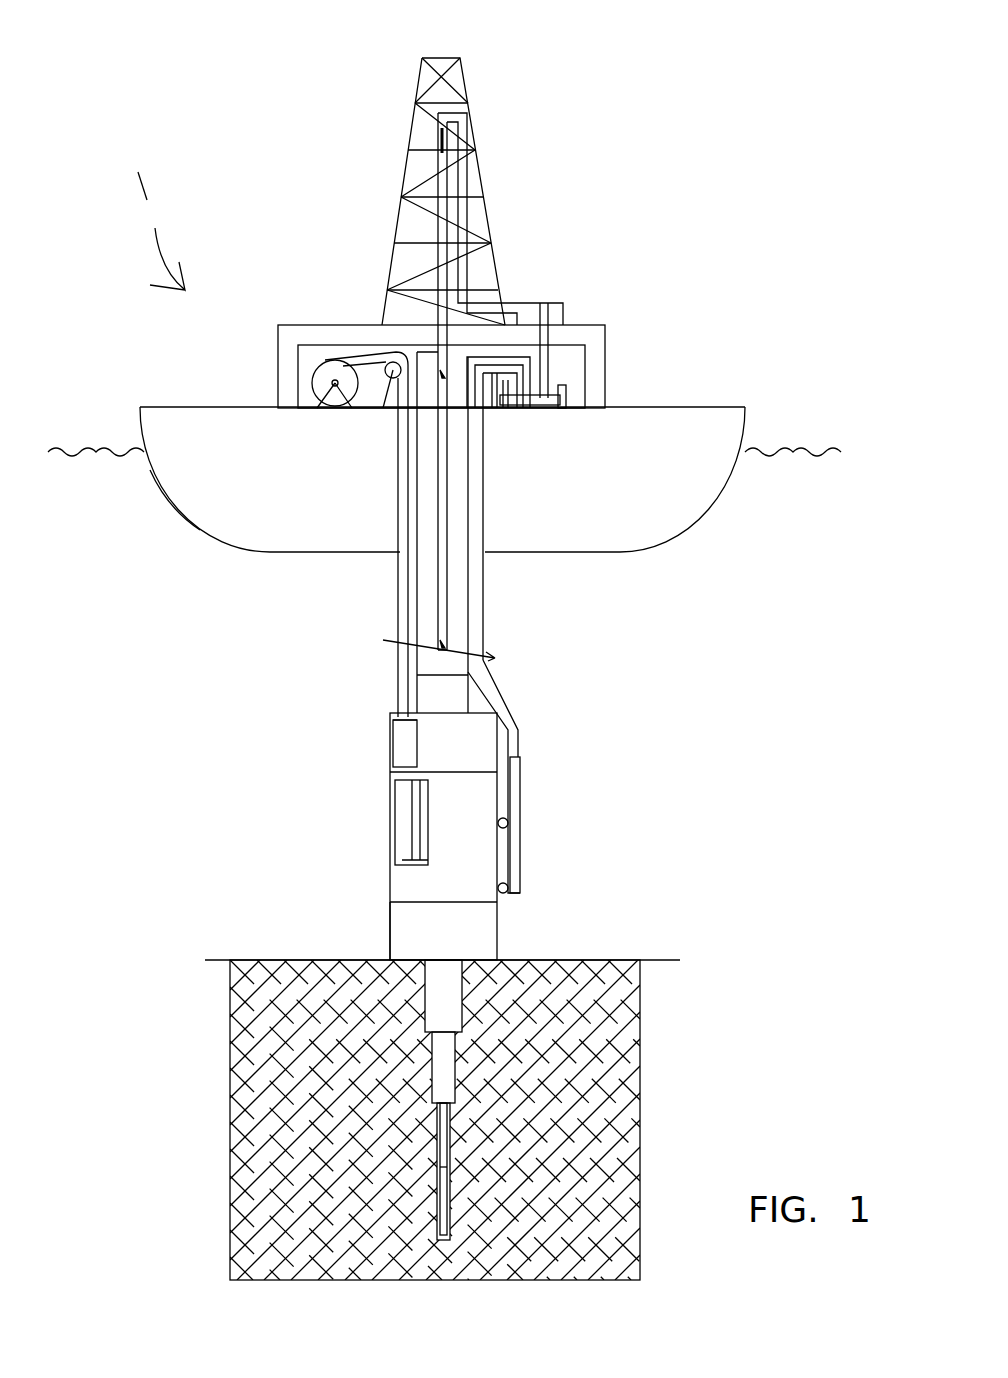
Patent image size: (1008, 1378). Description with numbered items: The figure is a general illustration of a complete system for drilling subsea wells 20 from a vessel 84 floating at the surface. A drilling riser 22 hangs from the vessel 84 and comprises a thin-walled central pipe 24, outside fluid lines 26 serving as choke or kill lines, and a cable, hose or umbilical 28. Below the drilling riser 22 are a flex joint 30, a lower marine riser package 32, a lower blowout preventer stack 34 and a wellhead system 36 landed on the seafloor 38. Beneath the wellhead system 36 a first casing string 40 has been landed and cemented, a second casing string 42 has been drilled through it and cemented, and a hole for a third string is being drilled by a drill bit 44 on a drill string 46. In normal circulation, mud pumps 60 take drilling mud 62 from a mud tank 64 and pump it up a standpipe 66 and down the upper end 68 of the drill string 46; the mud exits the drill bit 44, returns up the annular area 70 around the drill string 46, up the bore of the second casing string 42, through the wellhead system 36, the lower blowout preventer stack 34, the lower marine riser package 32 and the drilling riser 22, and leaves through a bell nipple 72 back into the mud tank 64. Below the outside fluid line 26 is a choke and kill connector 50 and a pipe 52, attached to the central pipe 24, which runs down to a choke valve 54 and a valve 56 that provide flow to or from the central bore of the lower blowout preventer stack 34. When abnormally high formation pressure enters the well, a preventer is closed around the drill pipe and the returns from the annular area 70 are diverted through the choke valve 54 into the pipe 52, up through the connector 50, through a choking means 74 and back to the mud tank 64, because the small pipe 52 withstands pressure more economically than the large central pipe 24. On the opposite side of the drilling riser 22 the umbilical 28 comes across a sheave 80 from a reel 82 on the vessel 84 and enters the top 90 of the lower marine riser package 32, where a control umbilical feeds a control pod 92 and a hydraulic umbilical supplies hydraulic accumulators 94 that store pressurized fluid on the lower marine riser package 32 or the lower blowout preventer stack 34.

The system for drilling subsea wells 20 is at (690, 701).
The drilling riser 22 is at (637, 567).
The central pipe 24 is at (470, 632).
The outside fluid lines 26 is at (500, 697).
The cable, hose or umbilical 28 is at (403, 627).
The flex joint 30 is at (455, 690).
The lower marine riser package 32 is at (485, 737).
The lower blowout preventer stack 34 is at (390, 892).
The wellhead system 36 is at (390, 916).
The seafloor 38 is at (535, 960).
The first casing string 40 is at (470, 1020).
The second casing string 42 is at (455, 1058).
The drill bit 44 is at (447, 1240).
The drill string 46 is at (448, 592).
The choke and kill (C&K) connector 50 is at (520, 762).
The pipe 52 is at (522, 790).
The choke valve 54 is at (507, 822).
The valve 56 is at (507, 887).
The mud pumps 60 is at (560, 307).
The drilling mud 62 is at (546, 400).
The mud tank 64 is at (562, 396).
The standpipe 66 is at (467, 180).
The upper end of the drill string 68 is at (445, 142).
The annular area 70 is at (450, 1105).
The bell nipple 72 is at (472, 358).
The choking means 74 is at (494, 403).
The sheave 80 is at (388, 392).
The reel 82 is at (327, 403).
The vessel 84 is at (240, 507).
The top of the lower marine riser package 90 is at (392, 718).
The control pod 92 is at (400, 745).
The hydraulic accumulators 94 is at (405, 820).